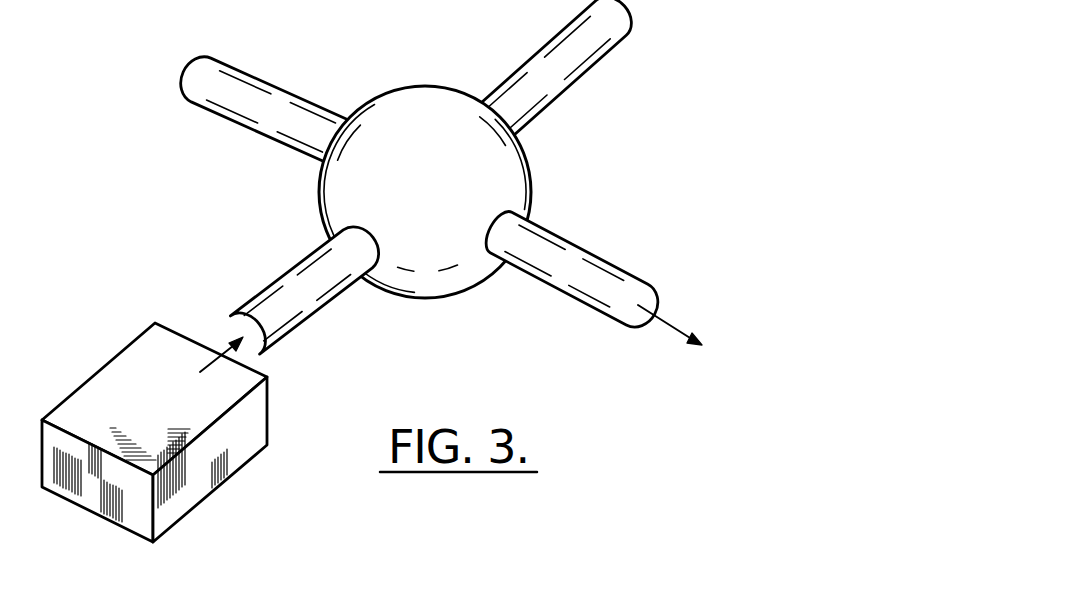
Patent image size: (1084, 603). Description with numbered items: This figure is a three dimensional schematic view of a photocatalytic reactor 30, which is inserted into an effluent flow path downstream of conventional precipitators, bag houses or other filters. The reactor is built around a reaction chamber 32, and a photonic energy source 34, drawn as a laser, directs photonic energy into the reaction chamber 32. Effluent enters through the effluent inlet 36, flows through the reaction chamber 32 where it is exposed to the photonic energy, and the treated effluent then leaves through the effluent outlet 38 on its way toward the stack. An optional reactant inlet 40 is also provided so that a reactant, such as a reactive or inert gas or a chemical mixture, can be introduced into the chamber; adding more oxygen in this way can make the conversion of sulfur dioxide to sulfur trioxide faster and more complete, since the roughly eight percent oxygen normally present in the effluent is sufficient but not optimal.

The photocatalytic reactor 30 is at (756, 36).
The reaction chamber 32 is at (418, 105).
The photonic energy source 34 is at (247, 443).
The effluent inlet 36 is at (253, 118).
The effluent outlet 38 is at (565, 287).
The reactant inlet 40 is at (560, 90).